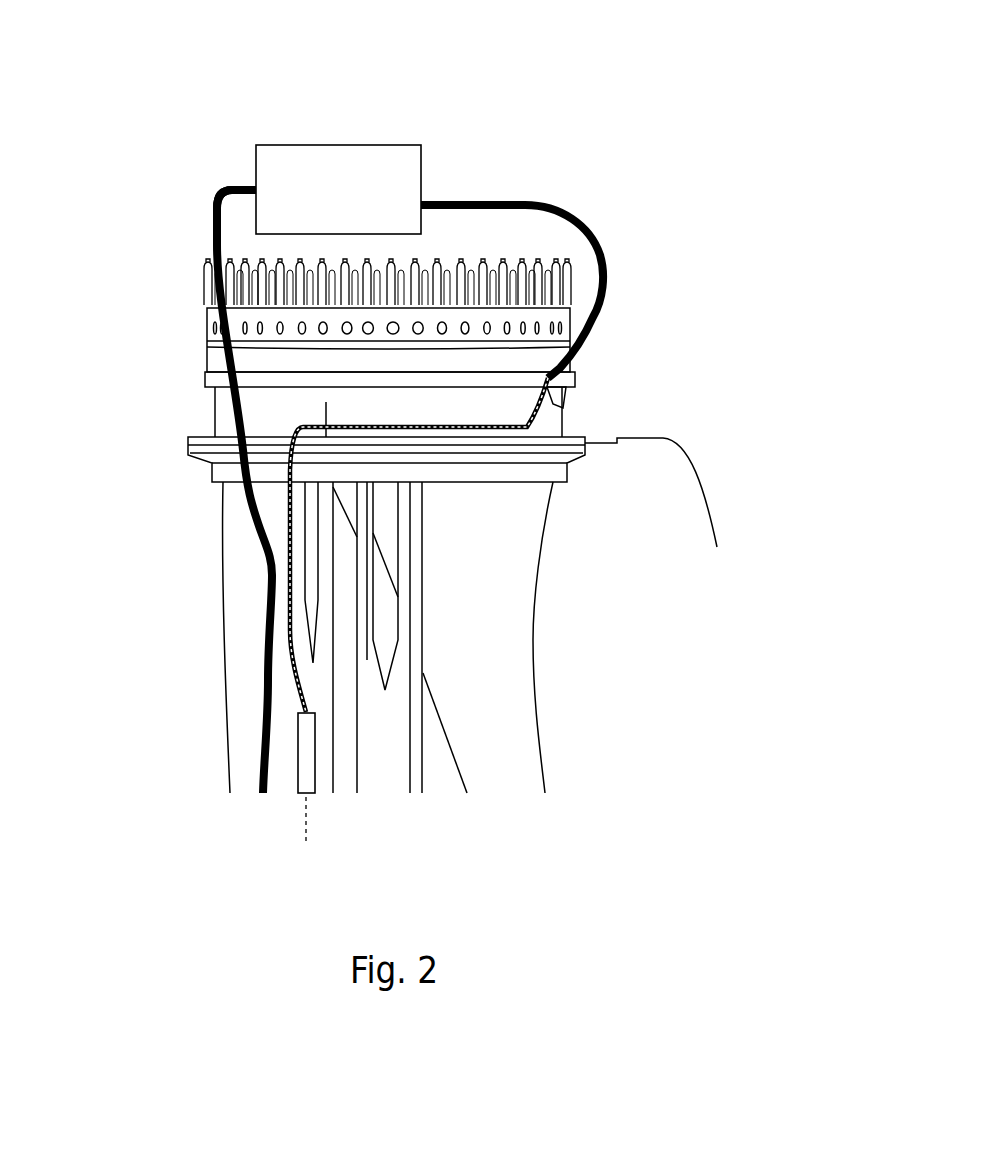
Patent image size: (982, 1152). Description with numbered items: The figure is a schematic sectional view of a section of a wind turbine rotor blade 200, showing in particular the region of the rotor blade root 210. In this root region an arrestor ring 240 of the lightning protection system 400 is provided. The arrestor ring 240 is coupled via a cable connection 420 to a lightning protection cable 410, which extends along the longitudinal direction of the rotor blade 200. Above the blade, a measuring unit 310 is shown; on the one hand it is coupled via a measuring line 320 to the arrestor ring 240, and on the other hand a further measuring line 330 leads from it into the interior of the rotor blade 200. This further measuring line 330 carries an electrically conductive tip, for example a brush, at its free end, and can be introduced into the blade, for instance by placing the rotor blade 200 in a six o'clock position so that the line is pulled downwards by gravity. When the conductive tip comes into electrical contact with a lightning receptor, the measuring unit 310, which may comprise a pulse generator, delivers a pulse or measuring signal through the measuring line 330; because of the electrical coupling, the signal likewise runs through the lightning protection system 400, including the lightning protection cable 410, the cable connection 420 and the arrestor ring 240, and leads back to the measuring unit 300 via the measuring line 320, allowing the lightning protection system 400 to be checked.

The rotor blade 200 is at (223, 572).
The rotor blade root 210 is at (220, 210).
The arrestor ring 240 is at (563, 405).
The measuring unit 300 is at (364, 398).
The measuring unit 310 is at (422, 160).
The measuring line 320 is at (525, 203).
The further measuring line 330 is at (242, 189).
The lightning protection system 400 is at (306, 805).
The lightning protection cable 410 is at (320, 755).
The cable connection 420 is at (295, 545).